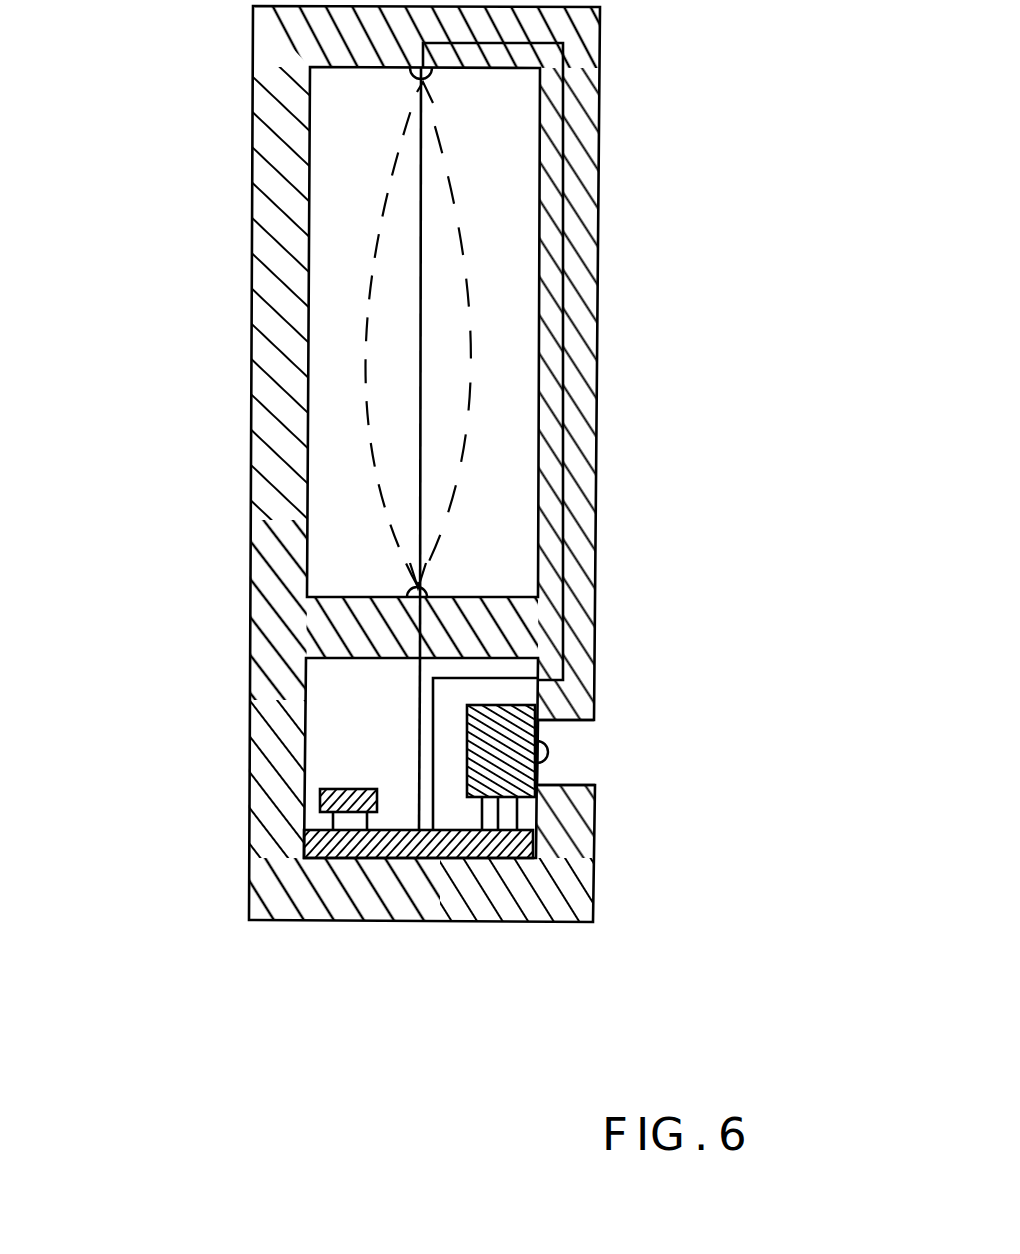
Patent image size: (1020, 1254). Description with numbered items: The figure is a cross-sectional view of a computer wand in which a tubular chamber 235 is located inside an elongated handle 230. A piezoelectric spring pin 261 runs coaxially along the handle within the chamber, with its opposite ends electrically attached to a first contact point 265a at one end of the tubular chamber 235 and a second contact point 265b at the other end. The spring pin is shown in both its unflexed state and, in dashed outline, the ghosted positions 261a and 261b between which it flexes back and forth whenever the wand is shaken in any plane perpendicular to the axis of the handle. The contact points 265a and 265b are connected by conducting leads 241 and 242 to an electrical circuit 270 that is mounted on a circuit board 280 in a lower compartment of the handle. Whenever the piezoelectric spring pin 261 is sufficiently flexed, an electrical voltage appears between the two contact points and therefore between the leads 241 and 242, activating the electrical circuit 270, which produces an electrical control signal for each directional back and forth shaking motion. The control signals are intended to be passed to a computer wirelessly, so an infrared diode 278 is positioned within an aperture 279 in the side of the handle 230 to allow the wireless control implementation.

The elongated handle 230 is at (262, 247).
The tubular chamber 235 is at (503, 168).
The conducting lead 241 is at (415, 712).
The conducting lead 242 is at (495, 682).
The piezoelectric spring pin 261 is at (425, 293).
The ghosted position 261a is at (470, 375).
The ghosted position 261b is at (365, 393).
The first contact point 265a is at (417, 77).
The second contact point 265b is at (410, 585).
The electrical circuit 270 is at (345, 790).
The infrared diode 278 is at (550, 752).
The aperture 279 is at (597, 773).
The circuit board 280 is at (323, 850).